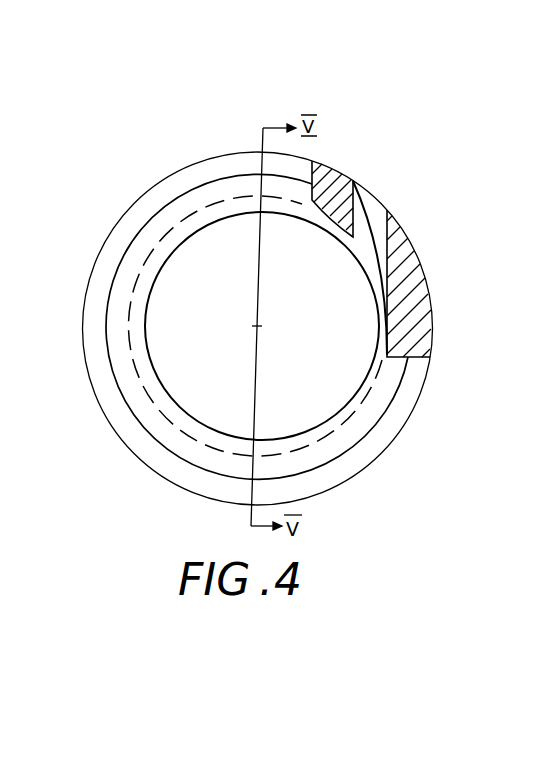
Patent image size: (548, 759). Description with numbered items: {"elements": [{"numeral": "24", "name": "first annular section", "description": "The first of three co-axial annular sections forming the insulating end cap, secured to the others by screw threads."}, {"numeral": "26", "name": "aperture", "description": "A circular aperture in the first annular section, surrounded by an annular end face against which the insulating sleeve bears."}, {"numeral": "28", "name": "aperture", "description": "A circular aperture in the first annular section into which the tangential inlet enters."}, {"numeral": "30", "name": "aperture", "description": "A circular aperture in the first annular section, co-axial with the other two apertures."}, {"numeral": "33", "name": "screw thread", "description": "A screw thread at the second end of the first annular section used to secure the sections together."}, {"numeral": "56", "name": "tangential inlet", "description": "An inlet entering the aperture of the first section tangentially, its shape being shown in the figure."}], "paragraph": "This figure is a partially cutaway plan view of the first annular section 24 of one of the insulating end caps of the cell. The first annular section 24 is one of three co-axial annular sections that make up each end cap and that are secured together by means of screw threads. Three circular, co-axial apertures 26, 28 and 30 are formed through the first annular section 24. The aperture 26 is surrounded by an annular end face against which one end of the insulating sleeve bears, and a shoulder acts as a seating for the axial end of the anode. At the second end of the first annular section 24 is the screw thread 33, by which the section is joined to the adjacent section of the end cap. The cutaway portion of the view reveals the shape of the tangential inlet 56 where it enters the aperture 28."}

The bearing assembly 24 is at (104, 224).
The groove 26 is at (124, 362).
The inner liner 28 is at (136, 292).
The bore 30 is at (323, 401).
The outer sleeve 33 is at (141, 432).
The slot 56 is at (368, 228).